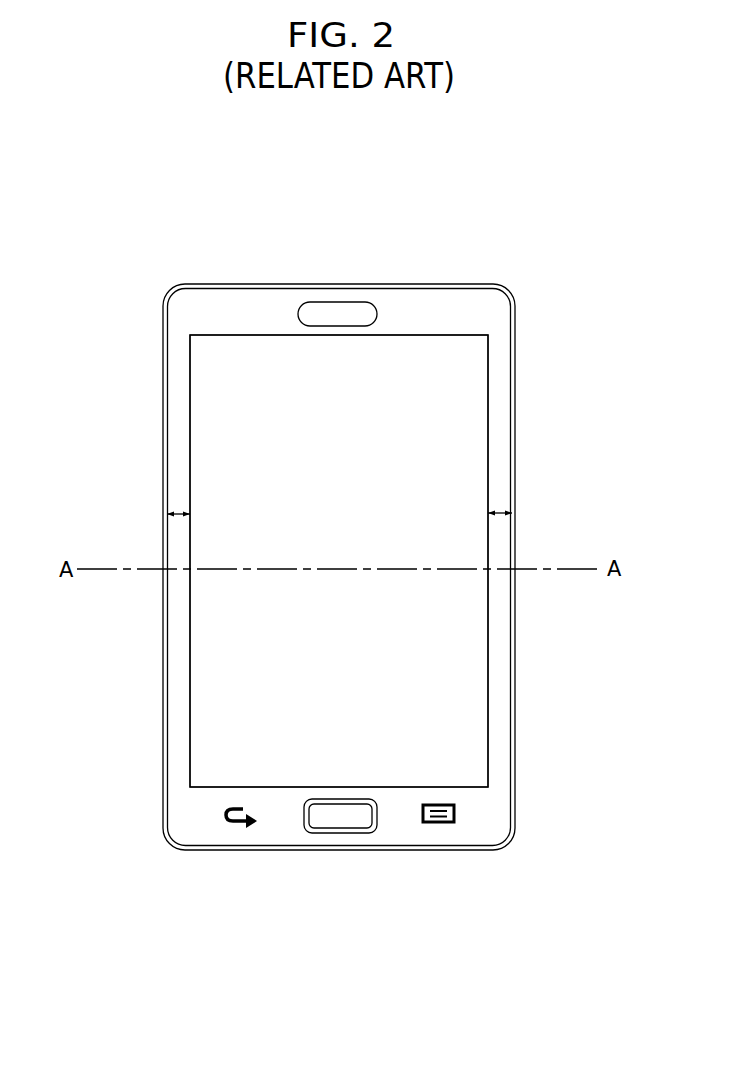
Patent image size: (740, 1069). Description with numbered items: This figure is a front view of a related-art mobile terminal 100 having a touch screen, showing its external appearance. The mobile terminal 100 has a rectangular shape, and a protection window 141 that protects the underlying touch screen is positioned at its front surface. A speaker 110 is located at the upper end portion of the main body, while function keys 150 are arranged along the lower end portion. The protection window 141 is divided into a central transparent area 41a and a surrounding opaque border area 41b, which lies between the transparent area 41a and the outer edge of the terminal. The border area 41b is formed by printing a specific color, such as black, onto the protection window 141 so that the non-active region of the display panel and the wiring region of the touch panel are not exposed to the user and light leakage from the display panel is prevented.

The mobile terminal 100 is at (464, 281).
The speaker 110 is at (332, 302).
The protection window 141 is at (500, 386).
The transparent area 41a is at (467, 446).
The border area 41b is at (166, 514).
The function keys 150 is at (437, 823).